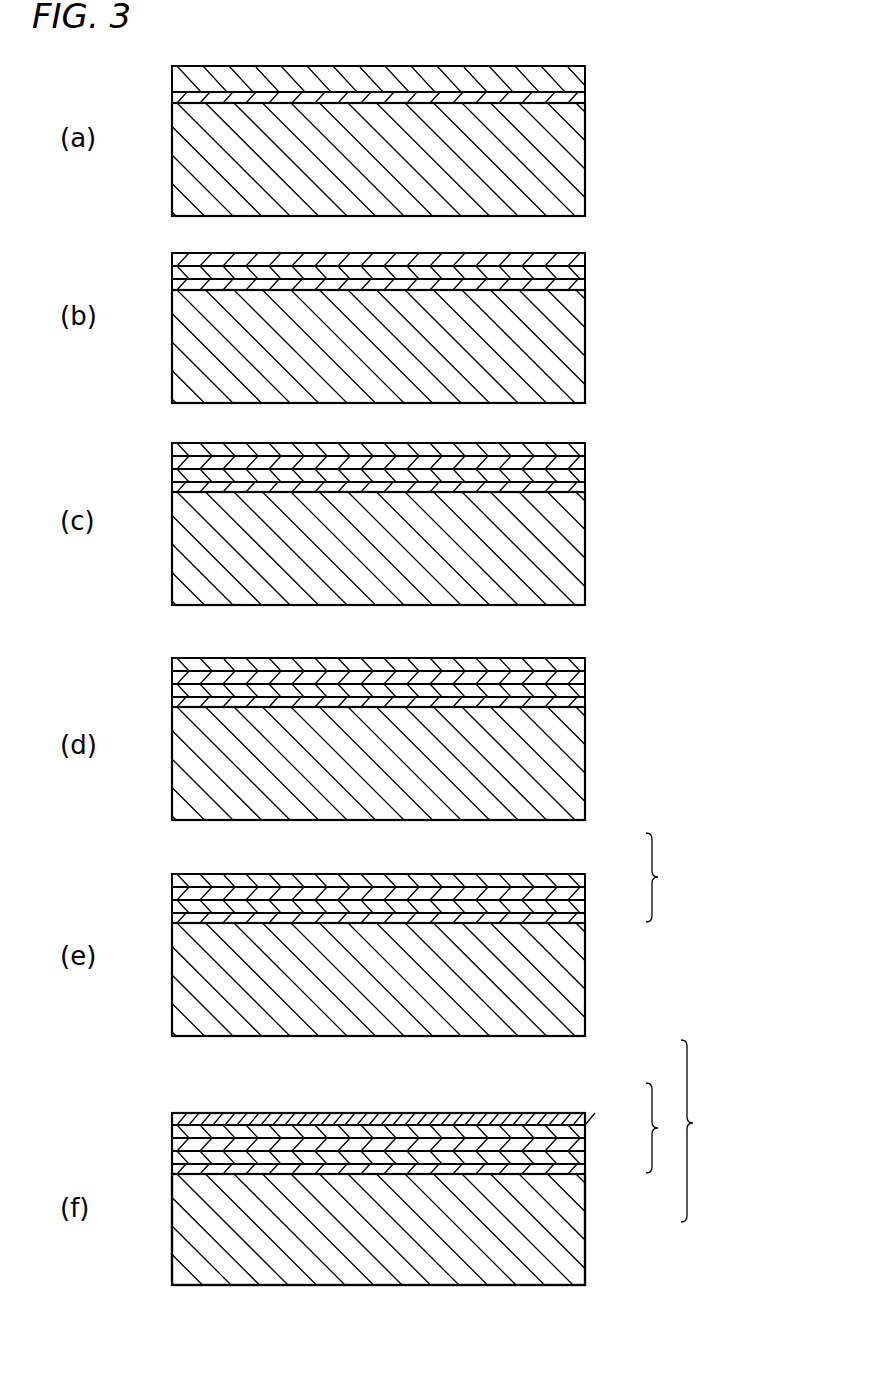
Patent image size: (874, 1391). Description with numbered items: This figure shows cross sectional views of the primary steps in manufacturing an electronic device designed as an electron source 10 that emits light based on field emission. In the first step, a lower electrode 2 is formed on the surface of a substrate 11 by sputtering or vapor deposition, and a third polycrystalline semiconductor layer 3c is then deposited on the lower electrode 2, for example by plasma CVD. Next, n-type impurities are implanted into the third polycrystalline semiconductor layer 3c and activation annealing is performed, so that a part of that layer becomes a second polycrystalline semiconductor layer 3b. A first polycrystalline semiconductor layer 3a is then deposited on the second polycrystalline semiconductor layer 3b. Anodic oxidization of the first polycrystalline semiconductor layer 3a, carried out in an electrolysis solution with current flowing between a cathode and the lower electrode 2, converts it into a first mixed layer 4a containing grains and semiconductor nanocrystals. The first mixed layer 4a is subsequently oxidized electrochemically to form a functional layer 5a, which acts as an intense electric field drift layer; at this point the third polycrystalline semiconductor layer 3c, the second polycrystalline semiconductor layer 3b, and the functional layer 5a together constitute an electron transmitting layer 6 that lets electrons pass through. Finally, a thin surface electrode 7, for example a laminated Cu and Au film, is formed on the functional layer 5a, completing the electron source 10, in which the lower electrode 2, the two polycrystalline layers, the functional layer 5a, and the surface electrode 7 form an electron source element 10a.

The lower electrode 2 is at (570, 99).
The first polycrystalline semiconductor layer 3a is at (573, 450).
The second polycrystalline semiconductor layer 3b is at (572, 260).
The third polycrystalline semiconductor layer 3c is at (570, 78).
The first mixed layer 4a is at (573, 665).
The functional layer 5a is at (573, 880).
The electron transmitting layer 6 is at (664, 1003).
The surface electrode 7 is at (562, 1121).
The electron source 10 is at (172, 1262).
The electron source element 10a is at (717, 1131).
The substrate 11 is at (547, 157).